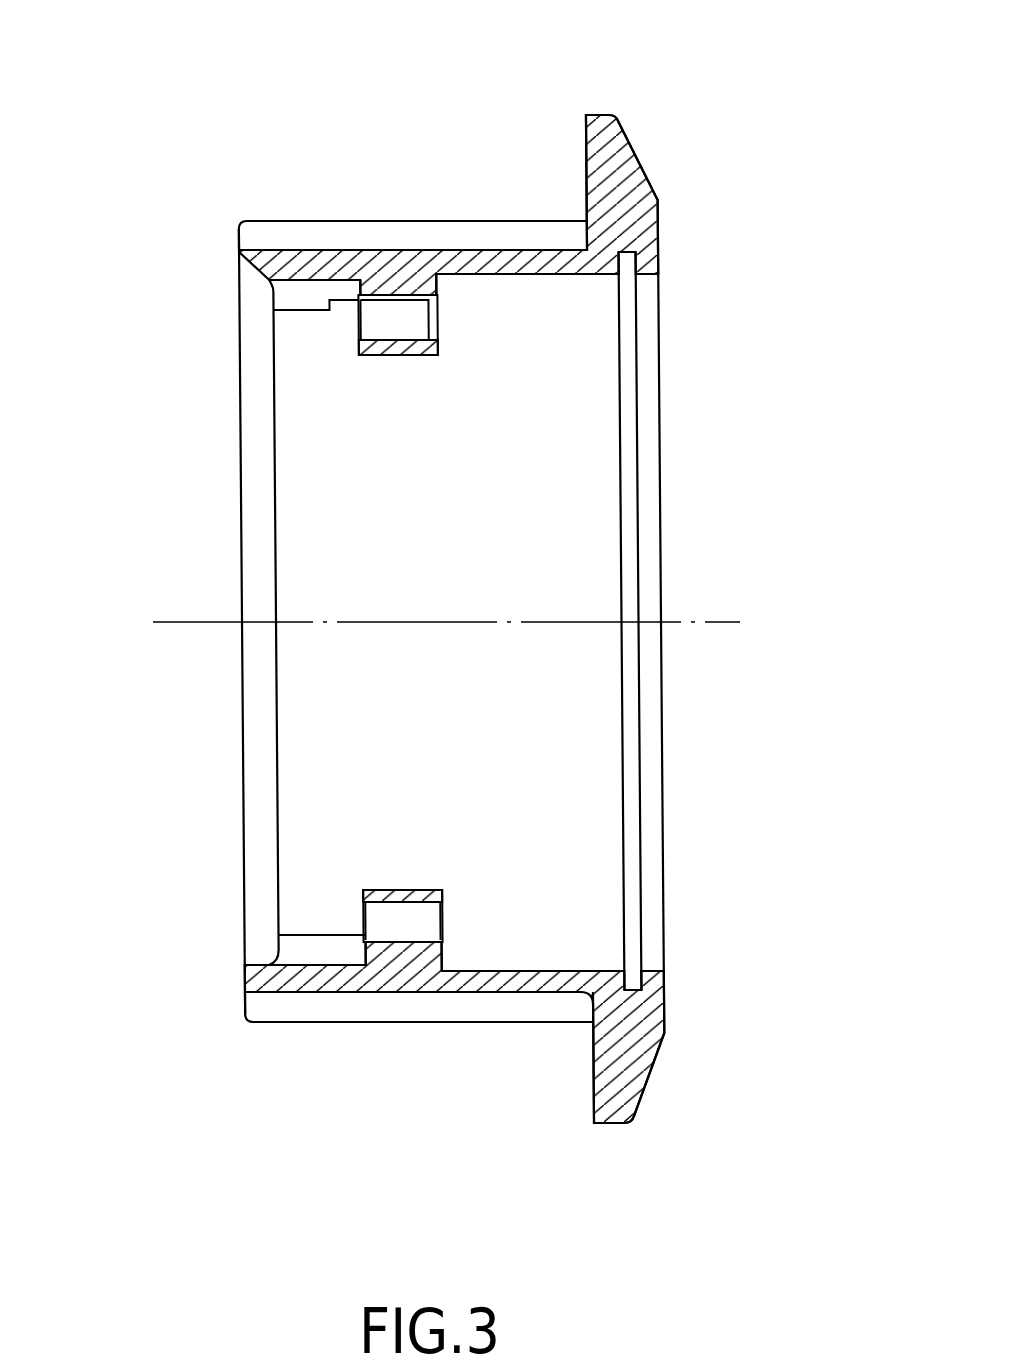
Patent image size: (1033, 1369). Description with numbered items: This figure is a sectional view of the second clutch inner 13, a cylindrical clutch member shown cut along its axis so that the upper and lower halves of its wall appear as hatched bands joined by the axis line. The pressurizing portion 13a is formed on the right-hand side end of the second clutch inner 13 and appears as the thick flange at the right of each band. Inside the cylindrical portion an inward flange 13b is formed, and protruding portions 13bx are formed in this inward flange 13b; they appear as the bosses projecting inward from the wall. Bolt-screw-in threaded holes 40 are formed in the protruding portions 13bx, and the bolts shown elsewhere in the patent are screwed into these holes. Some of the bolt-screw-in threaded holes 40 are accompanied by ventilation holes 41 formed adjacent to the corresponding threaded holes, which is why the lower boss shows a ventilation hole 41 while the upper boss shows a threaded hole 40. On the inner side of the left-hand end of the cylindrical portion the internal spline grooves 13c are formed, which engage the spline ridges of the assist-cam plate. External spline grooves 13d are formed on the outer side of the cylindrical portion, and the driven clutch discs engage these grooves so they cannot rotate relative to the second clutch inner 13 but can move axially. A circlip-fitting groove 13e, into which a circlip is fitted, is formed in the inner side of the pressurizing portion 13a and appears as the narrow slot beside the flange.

The second clutch inner 13 is at (172, 125).
The pressurizing portion 13a is at (612, 172).
The inward flange 13b is at (396, 292).
The protruding portion 13bx is at (393, 346).
The internal spline groove 13c is at (297, 297).
The external spline groove 13d is at (303, 235).
The circlip-fitting groove 13e is at (625, 260).
The bolt-screw-in threaded hole 40 is at (390, 322).
The ventilation hole 41 is at (395, 921).